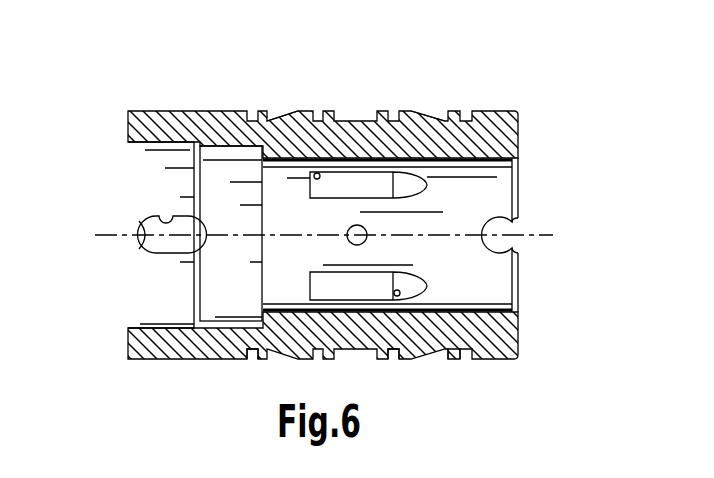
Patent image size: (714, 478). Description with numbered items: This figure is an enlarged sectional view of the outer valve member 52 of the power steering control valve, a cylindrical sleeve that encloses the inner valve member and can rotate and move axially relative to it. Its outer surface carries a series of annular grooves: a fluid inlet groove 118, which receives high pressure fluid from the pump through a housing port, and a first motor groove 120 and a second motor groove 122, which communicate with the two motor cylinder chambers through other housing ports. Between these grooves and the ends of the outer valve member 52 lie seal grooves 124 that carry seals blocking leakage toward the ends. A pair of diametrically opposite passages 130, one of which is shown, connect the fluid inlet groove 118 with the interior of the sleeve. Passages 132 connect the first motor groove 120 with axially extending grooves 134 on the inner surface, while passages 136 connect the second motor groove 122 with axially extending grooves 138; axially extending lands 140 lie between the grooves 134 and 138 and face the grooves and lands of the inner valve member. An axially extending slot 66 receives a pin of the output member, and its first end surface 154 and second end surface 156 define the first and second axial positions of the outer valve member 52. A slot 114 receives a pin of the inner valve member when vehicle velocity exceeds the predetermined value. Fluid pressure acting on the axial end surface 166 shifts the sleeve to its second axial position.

The outer valve member 52 is at (519, 80).
The axially extending slots 66 is at (167, 223).
The slots 114 is at (520, 221).
The fluid inlet groove 118 is at (352, 163).
The first motor groove 120 is at (433, 120).
The second motor groove 122 is at (273, 121).
The seal grooves 124 is at (318, 354).
The passages 130 is at (366, 242).
The passages 132 is at (418, 291).
The axially extending grooves 134 is at (328, 287).
The passages 136 is at (319, 173).
The axially extending grooves 138 is at (410, 187).
The axially extending lands 140 is at (362, 217).
The first end surfaces 154 is at (140, 233).
The second end surfaces 156 is at (204, 240).
The axial end surface 166 is at (521, 137).